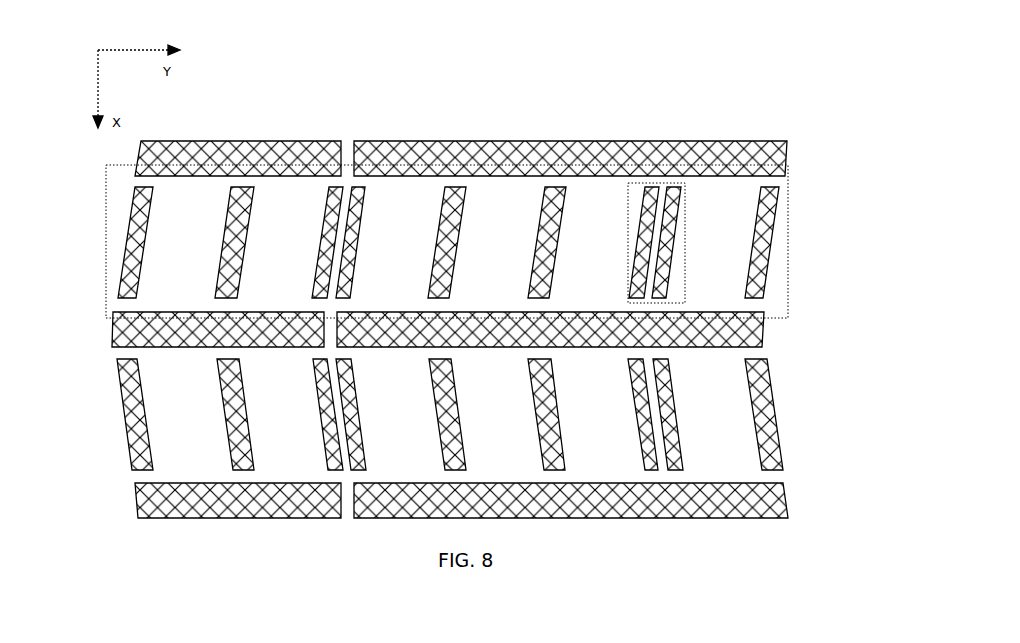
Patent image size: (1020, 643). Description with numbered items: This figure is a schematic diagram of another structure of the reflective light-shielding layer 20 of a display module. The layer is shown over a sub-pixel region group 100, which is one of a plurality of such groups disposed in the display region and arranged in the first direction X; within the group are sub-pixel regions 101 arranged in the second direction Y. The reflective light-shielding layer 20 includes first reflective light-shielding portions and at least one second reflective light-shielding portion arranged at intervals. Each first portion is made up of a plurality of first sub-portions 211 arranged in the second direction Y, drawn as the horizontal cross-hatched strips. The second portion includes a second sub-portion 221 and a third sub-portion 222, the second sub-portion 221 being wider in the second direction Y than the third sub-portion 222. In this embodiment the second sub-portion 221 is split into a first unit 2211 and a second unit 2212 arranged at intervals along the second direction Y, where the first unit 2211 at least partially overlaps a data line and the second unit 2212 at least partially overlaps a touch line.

The sub-pixel region group 100 is at (108, 186).
The reflective light-shielding layer 20 is at (760, 128).
The first sub-portion 211 is at (261, 158).
The sub-pixel region 101 is at (187, 215).
The third sub-portion 222 is at (558, 185).
The second sub-portion 221 is at (685, 212).
The first unit 2211 is at (675, 242).
The second unit 2212 is at (652, 275).